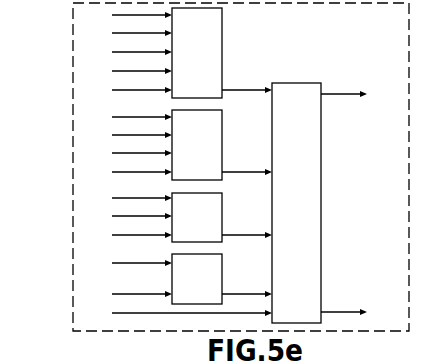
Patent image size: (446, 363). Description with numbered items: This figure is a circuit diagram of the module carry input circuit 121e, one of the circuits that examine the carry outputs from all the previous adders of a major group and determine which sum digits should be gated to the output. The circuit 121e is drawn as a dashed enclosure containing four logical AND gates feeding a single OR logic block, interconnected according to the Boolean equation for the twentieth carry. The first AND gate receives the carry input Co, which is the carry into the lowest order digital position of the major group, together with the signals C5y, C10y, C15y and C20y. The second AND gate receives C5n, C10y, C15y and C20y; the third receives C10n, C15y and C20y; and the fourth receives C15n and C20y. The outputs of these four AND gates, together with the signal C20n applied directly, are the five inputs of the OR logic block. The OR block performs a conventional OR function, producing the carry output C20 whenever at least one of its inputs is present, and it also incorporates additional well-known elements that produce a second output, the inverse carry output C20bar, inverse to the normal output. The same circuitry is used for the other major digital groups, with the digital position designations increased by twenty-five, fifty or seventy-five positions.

The module carry input circuit 121e is at (73, 53).
The carry input Co is at (128, 17).
The carry propagate signal for the fifth digital position C5y is at (128, 35).
The carry propagate signal for the tenth digital position C10y is at (128, 96).
The carry propagate signal for the fifteenth digital position C15y is at (128, 146).
The carry propagate signal for the twentieth digital position C20y is at (128, 194).
The carry generate signal for the fifth digital position C5n is at (128, 119).
The carry generate signal for the tenth digital position C10n is at (128, 200).
The carry generate signal for the fifteenth digital position C15n is at (128, 265).
The carry generate signal for the twentieth digital position C20n is at (178, 315).
The inverse carry output C20bar is at (381, 85).
The carry output for the twentieth digital position C20 is at (359, 315).